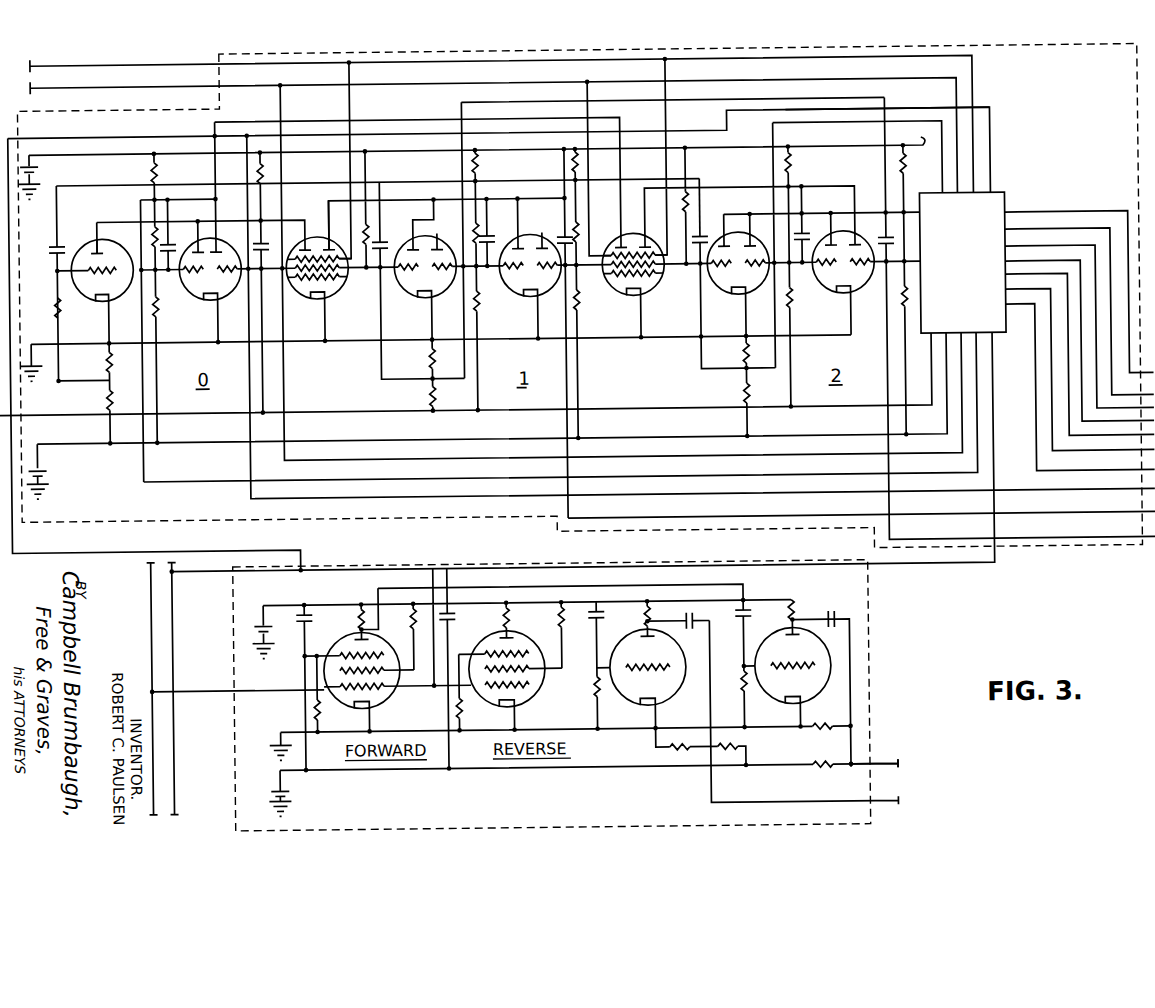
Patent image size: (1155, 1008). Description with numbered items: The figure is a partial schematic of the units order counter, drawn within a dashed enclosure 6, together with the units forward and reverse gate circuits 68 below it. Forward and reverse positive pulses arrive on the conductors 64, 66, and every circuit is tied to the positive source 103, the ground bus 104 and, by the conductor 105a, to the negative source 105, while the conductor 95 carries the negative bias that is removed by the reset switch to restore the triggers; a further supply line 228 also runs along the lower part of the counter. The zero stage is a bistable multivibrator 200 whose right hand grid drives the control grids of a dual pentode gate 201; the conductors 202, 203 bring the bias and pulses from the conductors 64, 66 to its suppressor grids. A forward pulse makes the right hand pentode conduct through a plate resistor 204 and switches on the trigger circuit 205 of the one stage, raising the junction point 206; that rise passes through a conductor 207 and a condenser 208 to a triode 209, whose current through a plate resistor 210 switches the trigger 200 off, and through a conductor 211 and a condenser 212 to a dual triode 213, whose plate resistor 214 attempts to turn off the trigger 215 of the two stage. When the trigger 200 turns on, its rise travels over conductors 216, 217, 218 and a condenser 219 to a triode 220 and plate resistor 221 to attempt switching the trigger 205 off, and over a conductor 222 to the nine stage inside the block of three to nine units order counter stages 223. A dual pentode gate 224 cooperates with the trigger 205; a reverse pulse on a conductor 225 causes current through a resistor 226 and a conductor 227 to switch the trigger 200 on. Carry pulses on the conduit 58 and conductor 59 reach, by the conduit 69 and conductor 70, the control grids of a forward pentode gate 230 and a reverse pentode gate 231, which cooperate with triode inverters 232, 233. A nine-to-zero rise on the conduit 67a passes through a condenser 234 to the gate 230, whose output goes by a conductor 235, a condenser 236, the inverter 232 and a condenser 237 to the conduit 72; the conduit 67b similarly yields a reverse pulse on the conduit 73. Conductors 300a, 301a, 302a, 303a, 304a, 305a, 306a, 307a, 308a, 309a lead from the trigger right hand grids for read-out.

The counter unit enclosure 6 is at (1142, 75).
The conductor 64 is at (78, 72).
The conductor 66 is at (110, 92).
The conduit 67a is at (90, 134).
The conduit 67b is at (894, 570).
The units forward and reverse gate circuits 68 is at (868, 640).
The conduit 58 is at (142, 561).
The conductor 59 is at (172, 642).
The conduit 69 is at (192, 687).
The conductor 70 is at (220, 572).
The conduit 72 is at (884, 768).
The conduit 73 is at (891, 803).
The conductor 95 is at (41, 410).
The positive source 103 is at (42, 166).
The ground bus 104 is at (38, 338).
The negative source 105 is at (52, 464).
The conductor 105a is at (52, 434).
The bistable multivibrator 200 is at (188, 300).
The dual pentode gate 201 is at (336, 298).
The conductor 202 is at (352, 98).
The conductor 203 is at (287, 98).
The plate resistor 204 is at (482, 162).
The trigger circuit 205 is at (518, 300).
The junction point 206 is at (563, 221).
The conductor 207 is at (58, 218).
The condenser 208 is at (64, 227).
The triode 209 is at (78, 300).
The plate resistor 210 is at (336, 149).
The conductor 211 is at (699, 180).
The condenser 212 is at (708, 234).
The dual triode 213 is at (730, 300).
The plate resistor 214 is at (925, 144).
The trigger 215 is at (836, 300).
The conductor 216 is at (232, 205).
The conductor 217 is at (336, 133).
The conductor 218 is at (383, 182).
The condenser 219 is at (386, 232).
The triode 220 is at (404, 300).
The plate resistor 221 is at (578, 164).
The conductor 222 is at (990, 134).
The 3 to 9 units order counter stages 223 is at (1008, 200).
The dual pentode gate 224 is at (624, 298).
The conductor 225 is at (583, 95).
The resistor 226 is at (154, 162).
The conductor 227 is at (238, 118).
The conductor 228 is at (200, 476).
The forward pentode gate 230 is at (388, 697).
The reverse pentode gate 231 is at (530, 698).
The triode inverter 232 is at (766, 700).
The triode inverter 233 is at (622, 700).
The condenser 234 is at (350, 626).
The conductor 235 is at (374, 586).
The condenser 236 is at (760, 617).
The condenser 237 is at (832, 620).
The conductor 300a is at (1086, 560).
The conductor 301a is at (1069, 520).
The conductor 302a is at (1079, 500).
The conductor 303a is at (1079, 480).
The conductor 304a is at (1079, 463).
The conductor 305a is at (1079, 448).
The conductor 306a is at (1032, 277).
The conductor 307a is at (1032, 258).
The conductor 308a is at (1032, 241).
The conductor 309a is at (1050, 220).